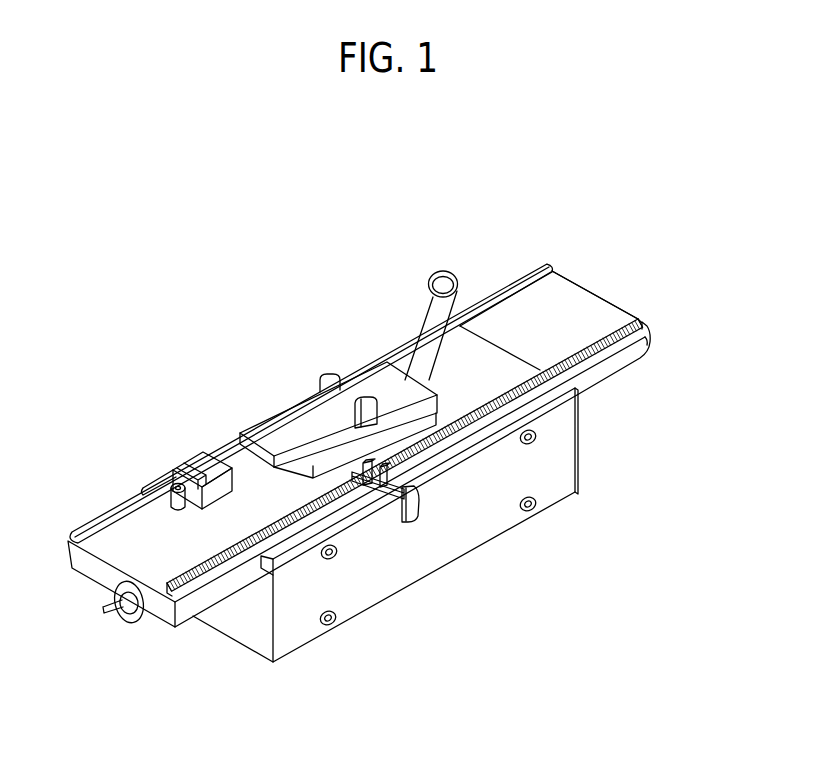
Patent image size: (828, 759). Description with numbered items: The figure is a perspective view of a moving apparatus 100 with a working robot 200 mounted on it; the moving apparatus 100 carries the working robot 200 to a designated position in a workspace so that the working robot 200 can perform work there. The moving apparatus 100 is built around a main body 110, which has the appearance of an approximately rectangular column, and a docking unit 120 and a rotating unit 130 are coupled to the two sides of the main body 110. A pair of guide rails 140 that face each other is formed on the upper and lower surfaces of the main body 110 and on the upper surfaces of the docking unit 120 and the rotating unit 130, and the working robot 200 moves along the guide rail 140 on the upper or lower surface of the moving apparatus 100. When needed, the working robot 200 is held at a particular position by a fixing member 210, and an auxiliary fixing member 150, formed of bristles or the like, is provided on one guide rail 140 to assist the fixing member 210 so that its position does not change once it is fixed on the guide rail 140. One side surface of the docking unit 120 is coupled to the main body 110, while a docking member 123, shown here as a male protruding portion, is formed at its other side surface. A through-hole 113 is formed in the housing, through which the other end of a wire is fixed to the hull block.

The moving apparatus 100 is at (396, 342).
The main body 110 is at (299, 656).
The through-hole 113 is at (337, 619).
The docking unit 120 is at (140, 538).
The docking member 123 is at (110, 613).
The rotating unit 130 is at (587, 299).
The guide rail 140 is at (501, 292).
The auxiliary fixing member 150 is at (641, 318).
The working robot 200 is at (288, 418).
The fixing member 210 is at (398, 523).